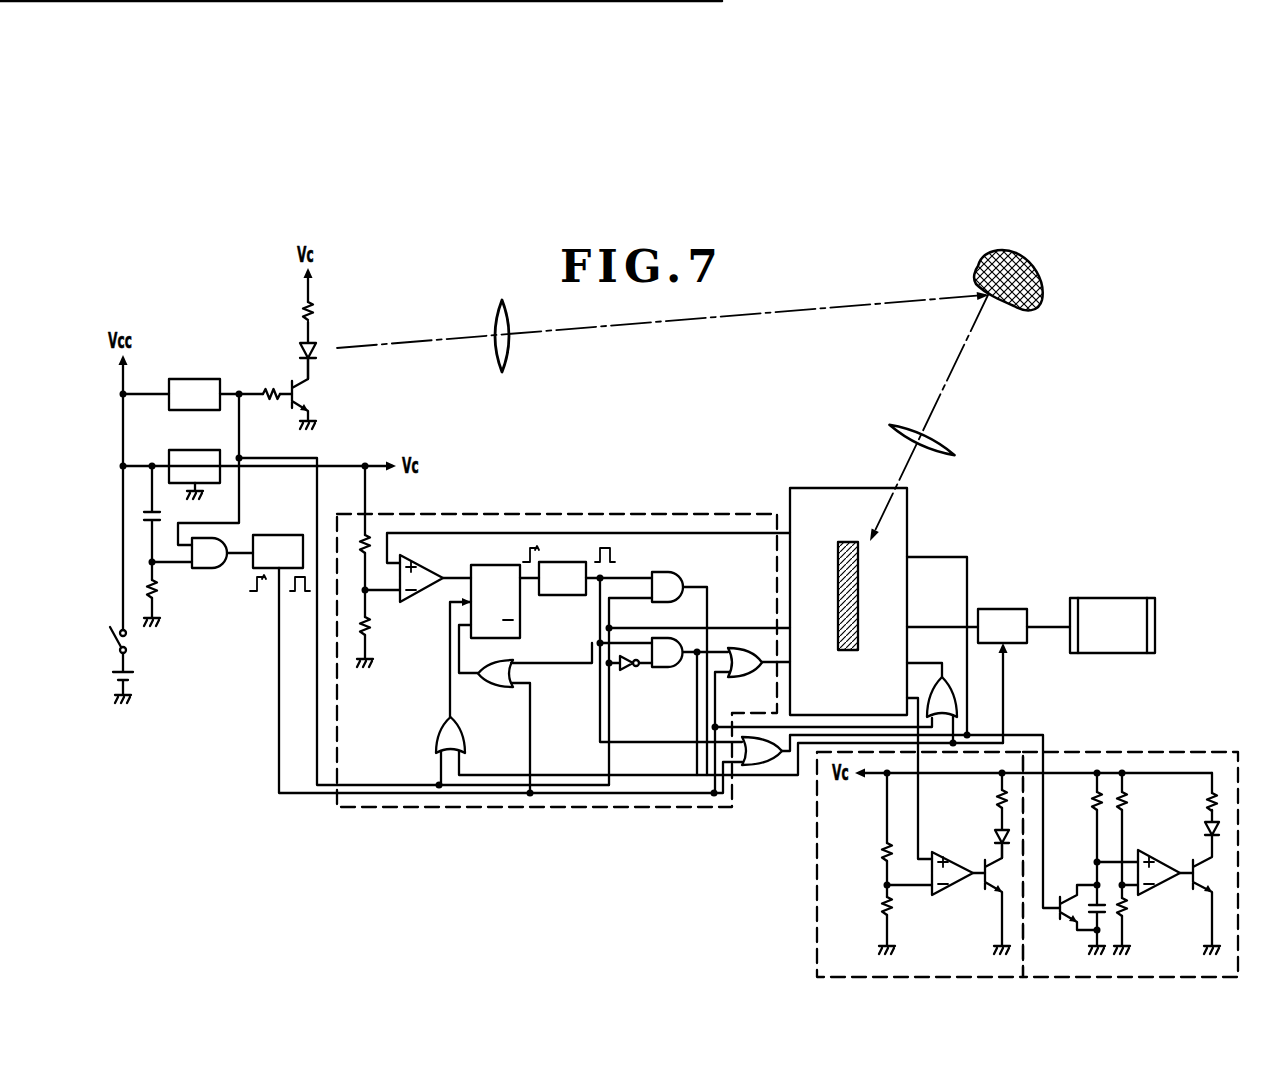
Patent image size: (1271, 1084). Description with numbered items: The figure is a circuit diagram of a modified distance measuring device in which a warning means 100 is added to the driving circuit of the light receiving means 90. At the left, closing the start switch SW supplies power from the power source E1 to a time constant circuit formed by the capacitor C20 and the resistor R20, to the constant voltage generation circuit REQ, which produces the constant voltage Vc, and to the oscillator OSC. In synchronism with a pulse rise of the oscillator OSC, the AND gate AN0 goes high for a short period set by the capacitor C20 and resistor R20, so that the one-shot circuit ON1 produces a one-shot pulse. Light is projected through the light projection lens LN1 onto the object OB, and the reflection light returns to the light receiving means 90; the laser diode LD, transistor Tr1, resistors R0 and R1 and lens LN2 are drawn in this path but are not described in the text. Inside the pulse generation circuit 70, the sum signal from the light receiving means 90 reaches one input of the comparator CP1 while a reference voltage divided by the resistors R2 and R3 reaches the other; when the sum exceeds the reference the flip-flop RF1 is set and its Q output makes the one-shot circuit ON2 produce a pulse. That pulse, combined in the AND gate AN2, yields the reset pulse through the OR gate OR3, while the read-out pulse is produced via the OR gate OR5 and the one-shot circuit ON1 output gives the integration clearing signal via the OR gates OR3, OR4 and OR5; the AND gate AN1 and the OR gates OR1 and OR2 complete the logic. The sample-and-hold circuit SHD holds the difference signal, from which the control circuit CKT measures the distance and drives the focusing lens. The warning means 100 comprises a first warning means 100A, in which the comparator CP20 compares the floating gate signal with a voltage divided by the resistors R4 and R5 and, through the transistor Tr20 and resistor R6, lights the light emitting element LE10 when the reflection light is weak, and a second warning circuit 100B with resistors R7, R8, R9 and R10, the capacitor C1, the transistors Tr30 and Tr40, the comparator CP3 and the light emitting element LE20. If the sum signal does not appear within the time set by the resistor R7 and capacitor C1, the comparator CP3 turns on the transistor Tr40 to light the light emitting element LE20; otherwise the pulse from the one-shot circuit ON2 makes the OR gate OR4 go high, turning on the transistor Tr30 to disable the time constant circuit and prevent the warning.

The oscillator OSC is at (194, 394).
The constant voltage generation circuit REQ is at (194, 474).
The capacitor C20 is at (150, 521).
The resistor R20 is at (158, 592).
The start switch SW is at (127, 642).
The power source E1 is at (128, 683).
The AND gate AN0 is at (209, 553).
The one-shot circuit ON1 is at (278, 551).
The resistor R0 is at (268, 390).
The transistor Tr1 is at (310, 393).
The laser diode LD is at (303, 350).
The resistor R1 is at (312, 312).
The light projection lens LN1 is at (509, 345).
The object OB is at (1020, 310).
The receiving lens LN2 is at (904, 428).
The light receiving means 90 is at (907, 525).
The pulse generation circuit 70 is at (685, 808).
The resistor R2 is at (366, 540).
The resistor R3 is at (370, 626).
The comparator CP1 is at (418, 594).
The RST flip-flop RF1 is at (495, 565).
The one-shot circuit ON2 is at (562, 578).
The AND gate AN1 is at (668, 572).
The AND gate AN2 is at (666, 667).
The OR gate OR1 is at (442, 731).
The OR gate OR2 is at (506, 688).
The OR gate OR3 is at (748, 678).
The OR gate OR4 is at (762, 768).
The OR gate OR5 is at (948, 677).
The sample-and-hold circuit SHD is at (1002, 626).
The control circuit CKT is at (1112, 625).
The warning means 100 is at (991, 864).
The first warning means 100A is at (920, 864).
The second warning circuit 100B is at (1130, 864).
The resistor R4 is at (882, 853).
The resistor R5 is at (882, 907).
The resistor R6 is at (997, 800).
The light emitting element LE10 is at (995, 835).
The comparator CP20 is at (948, 896).
The transistor Tr20 is at (988, 892).
The resistor R7 is at (1093, 800).
The resistor R8 is at (1127, 800).
The resistor R9 is at (1126, 912).
The resistor R10 is at (1208, 802).
The capacitor C1 is at (1105, 913).
The transistor Tr30 is at (1062, 897).
The comparator CP3 is at (1163, 894).
The transistor Tr40 is at (1200, 892).
The light emitting element LE20 is at (1208, 835).